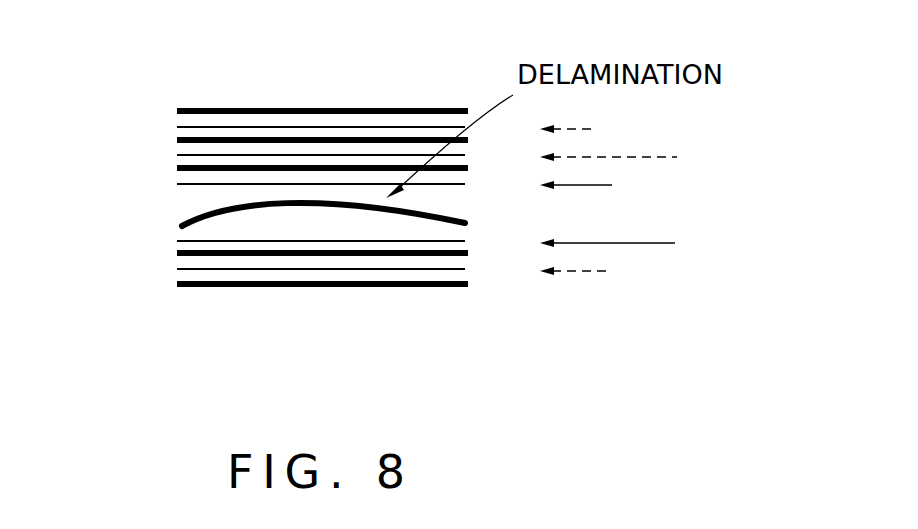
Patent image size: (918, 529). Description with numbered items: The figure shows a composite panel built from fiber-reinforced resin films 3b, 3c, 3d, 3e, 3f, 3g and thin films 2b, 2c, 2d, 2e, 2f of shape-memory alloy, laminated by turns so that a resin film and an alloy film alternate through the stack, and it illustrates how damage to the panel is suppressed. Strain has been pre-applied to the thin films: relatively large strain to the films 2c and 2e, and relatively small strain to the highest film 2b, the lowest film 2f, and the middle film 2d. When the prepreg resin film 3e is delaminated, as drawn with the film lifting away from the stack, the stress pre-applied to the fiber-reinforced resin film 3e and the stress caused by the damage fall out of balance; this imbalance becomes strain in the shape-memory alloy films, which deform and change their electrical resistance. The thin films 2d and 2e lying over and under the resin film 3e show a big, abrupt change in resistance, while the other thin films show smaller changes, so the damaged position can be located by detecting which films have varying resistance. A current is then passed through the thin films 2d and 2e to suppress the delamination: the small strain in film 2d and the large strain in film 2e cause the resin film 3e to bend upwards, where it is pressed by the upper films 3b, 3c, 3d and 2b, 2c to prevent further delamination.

The thin film of shape-memory alloy 2b is at (255, 127).
The thin film of shape-memory alloy 2c is at (178, 155).
The thin film of shape-memory alloy 2d is at (208, 184).
The thin film of shape-memory alloy 2e is at (443, 240).
The thin film of shape-memory alloy 2f is at (177, 270).
The fiber-reinforced resin film 3b is at (345, 111).
The fiber-reinforced resin film 3c is at (410, 141).
The fiber-reinforced resin film 3d is at (178, 168).
The fiber-reinforced resin film 3e is at (277, 207).
The fiber-reinforced resin film 3f is at (177, 254).
The fiber-reinforced resin film 3g is at (337, 287).